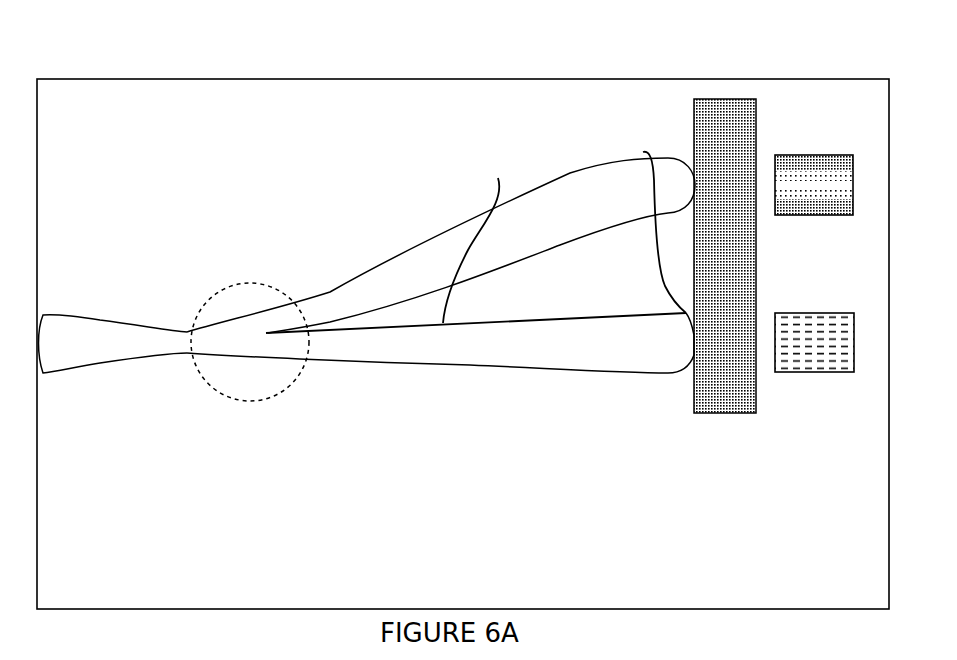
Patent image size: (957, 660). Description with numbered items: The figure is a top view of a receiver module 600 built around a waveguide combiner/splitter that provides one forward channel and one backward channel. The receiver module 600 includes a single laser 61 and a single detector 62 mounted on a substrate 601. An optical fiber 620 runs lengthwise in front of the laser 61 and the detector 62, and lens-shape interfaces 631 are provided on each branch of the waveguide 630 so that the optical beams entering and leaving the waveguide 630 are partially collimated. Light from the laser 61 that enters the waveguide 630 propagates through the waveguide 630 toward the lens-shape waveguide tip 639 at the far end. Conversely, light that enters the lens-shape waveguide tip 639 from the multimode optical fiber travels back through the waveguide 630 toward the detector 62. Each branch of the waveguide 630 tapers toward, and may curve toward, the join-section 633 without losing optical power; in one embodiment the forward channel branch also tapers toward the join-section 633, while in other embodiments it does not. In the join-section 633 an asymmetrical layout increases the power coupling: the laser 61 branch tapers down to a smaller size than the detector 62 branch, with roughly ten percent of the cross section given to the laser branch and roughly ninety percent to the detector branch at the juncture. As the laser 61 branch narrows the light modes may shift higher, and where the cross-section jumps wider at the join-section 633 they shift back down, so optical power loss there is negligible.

The receiver module 600 is at (468, 40).
The substrate 601 is at (173, 41).
The optical fiber 620 is at (738, 42).
The laser 61 is at (827, 155).
The detector 62 is at (826, 313).
The waveguide 630 is at (367, 262).
The lens-shape interface 631 is at (694, 168).
The join-section 633 is at (212, 300).
The lens-shape waveguide tip 639 is at (52, 317).